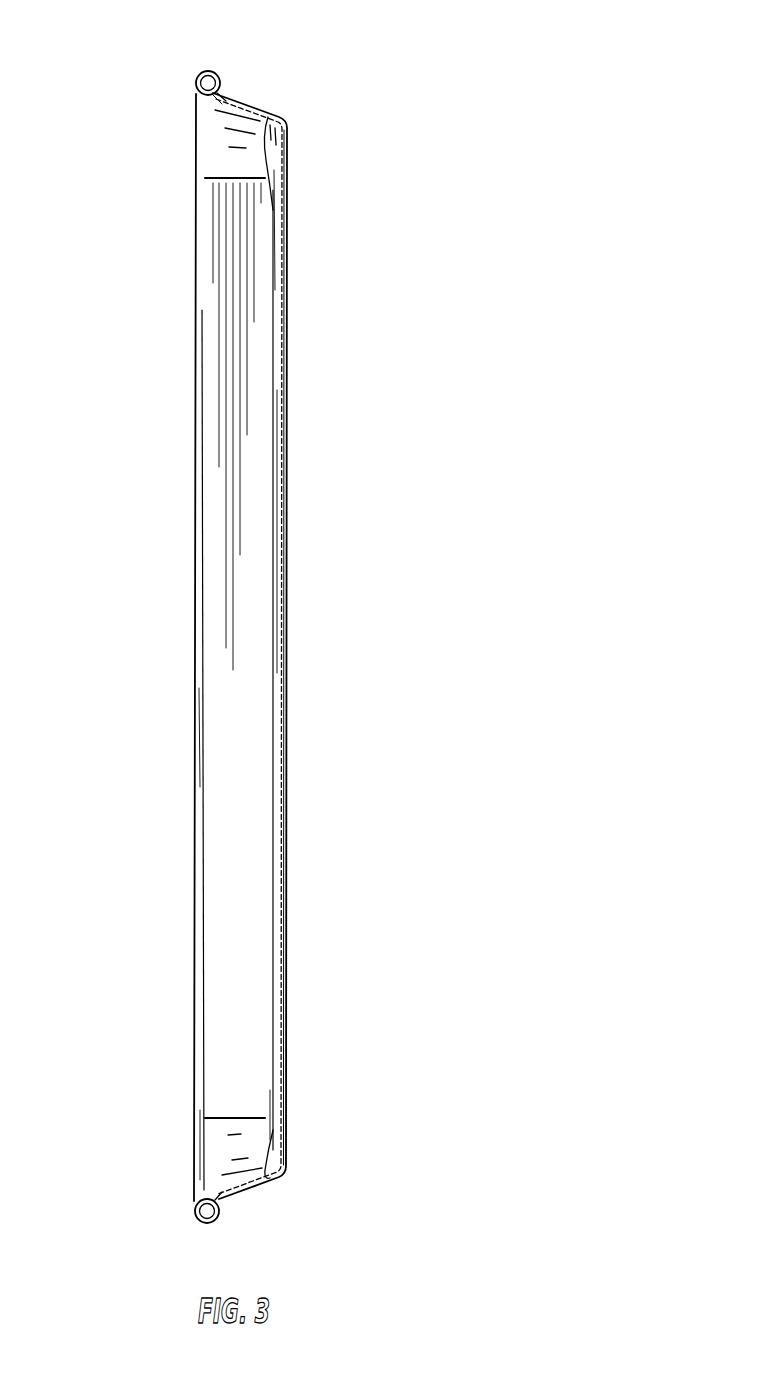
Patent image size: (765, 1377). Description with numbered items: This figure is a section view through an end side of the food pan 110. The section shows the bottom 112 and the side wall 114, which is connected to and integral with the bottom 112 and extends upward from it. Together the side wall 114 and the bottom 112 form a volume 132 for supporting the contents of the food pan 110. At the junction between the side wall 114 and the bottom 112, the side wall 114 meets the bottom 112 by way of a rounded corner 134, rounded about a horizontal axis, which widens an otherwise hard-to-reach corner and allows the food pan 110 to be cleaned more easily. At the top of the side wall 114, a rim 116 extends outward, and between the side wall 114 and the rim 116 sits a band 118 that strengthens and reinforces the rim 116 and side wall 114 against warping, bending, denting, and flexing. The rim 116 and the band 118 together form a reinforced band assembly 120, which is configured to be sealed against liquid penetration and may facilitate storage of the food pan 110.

The food pan 110 is at (430, 172).
The bottom 112 is at (286, 768).
The side wall 114 is at (242, 627).
The rim 116 is at (195, 248).
The band 118 is at (215, 88).
The reinforced band assembly 120 is at (198, 56).
The volume 132 is at (222, 914).
The rounded corner 134 is at (283, 1178).